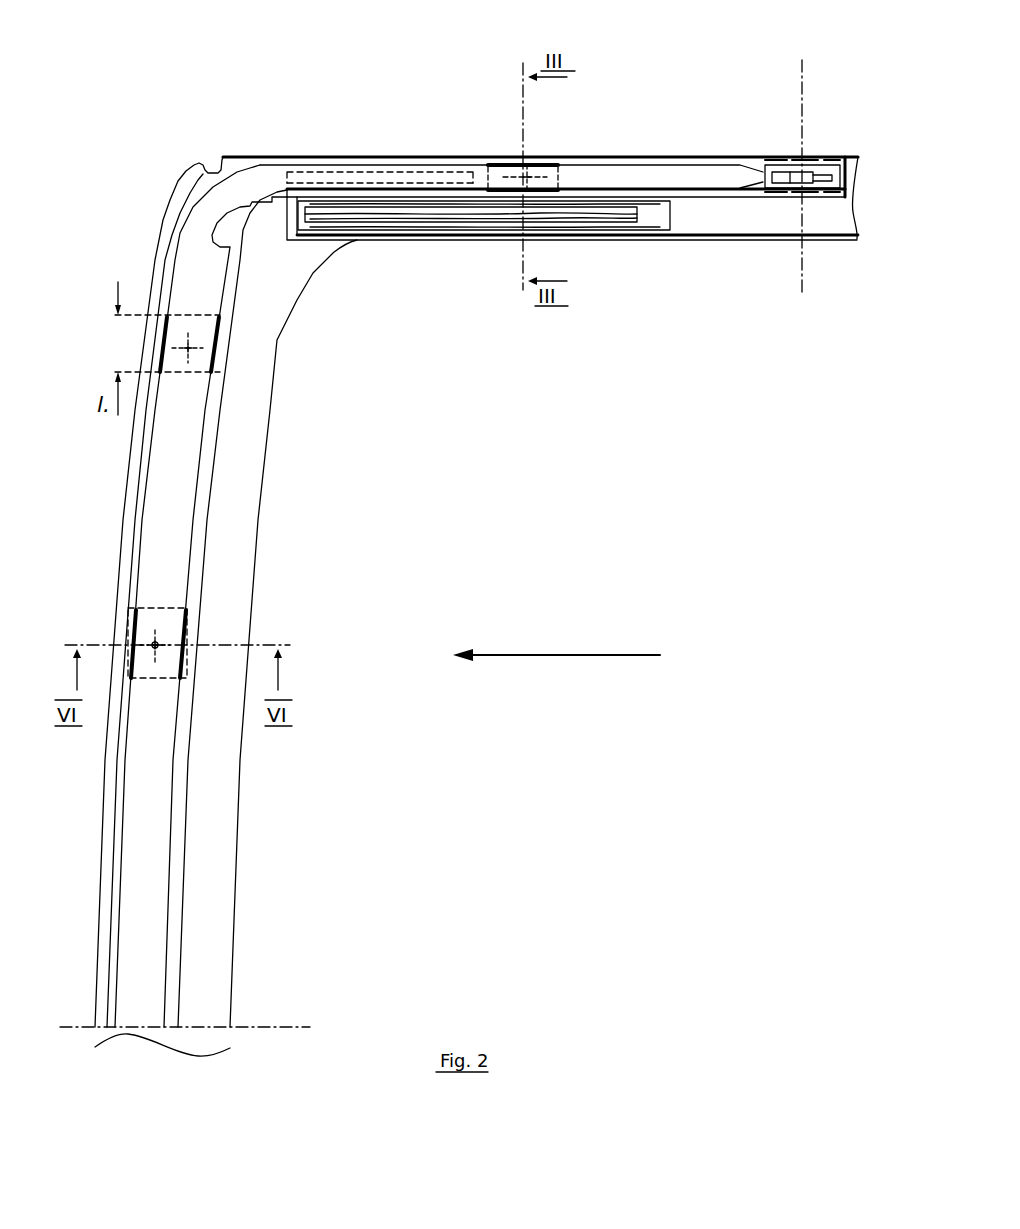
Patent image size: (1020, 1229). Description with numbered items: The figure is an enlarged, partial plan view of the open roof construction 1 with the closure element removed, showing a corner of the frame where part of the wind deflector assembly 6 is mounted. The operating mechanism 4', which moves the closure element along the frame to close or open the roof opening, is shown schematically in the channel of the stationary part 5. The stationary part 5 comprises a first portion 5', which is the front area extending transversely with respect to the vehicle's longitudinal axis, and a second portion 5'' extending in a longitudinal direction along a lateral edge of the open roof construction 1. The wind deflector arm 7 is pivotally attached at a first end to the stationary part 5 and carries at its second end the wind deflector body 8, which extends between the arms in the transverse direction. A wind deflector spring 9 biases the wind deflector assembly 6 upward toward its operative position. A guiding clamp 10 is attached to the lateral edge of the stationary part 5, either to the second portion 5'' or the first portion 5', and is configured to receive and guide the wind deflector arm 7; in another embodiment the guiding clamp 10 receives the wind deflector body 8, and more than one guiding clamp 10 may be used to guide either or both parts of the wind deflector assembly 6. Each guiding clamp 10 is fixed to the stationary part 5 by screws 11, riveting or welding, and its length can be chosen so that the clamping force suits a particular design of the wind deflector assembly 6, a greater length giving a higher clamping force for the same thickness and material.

The open roof construction 1 is at (241, 146).
The operating mechanism 4' is at (492, 253).
The stationary part 5 is at (788, 132).
The first portion of the stationary part 5' is at (159, 588).
The second portion of the stationary part 5'' is at (552, 126).
The wind deflector assembly 6 is at (262, 176).
The wind deflector arm 7 is at (320, 183).
The wind deflector body 8 is at (188, 565).
The wind deflector spring 9 is at (353, 172).
The guiding clamp 10 is at (497, 162).
The screws 11 is at (518, 172).